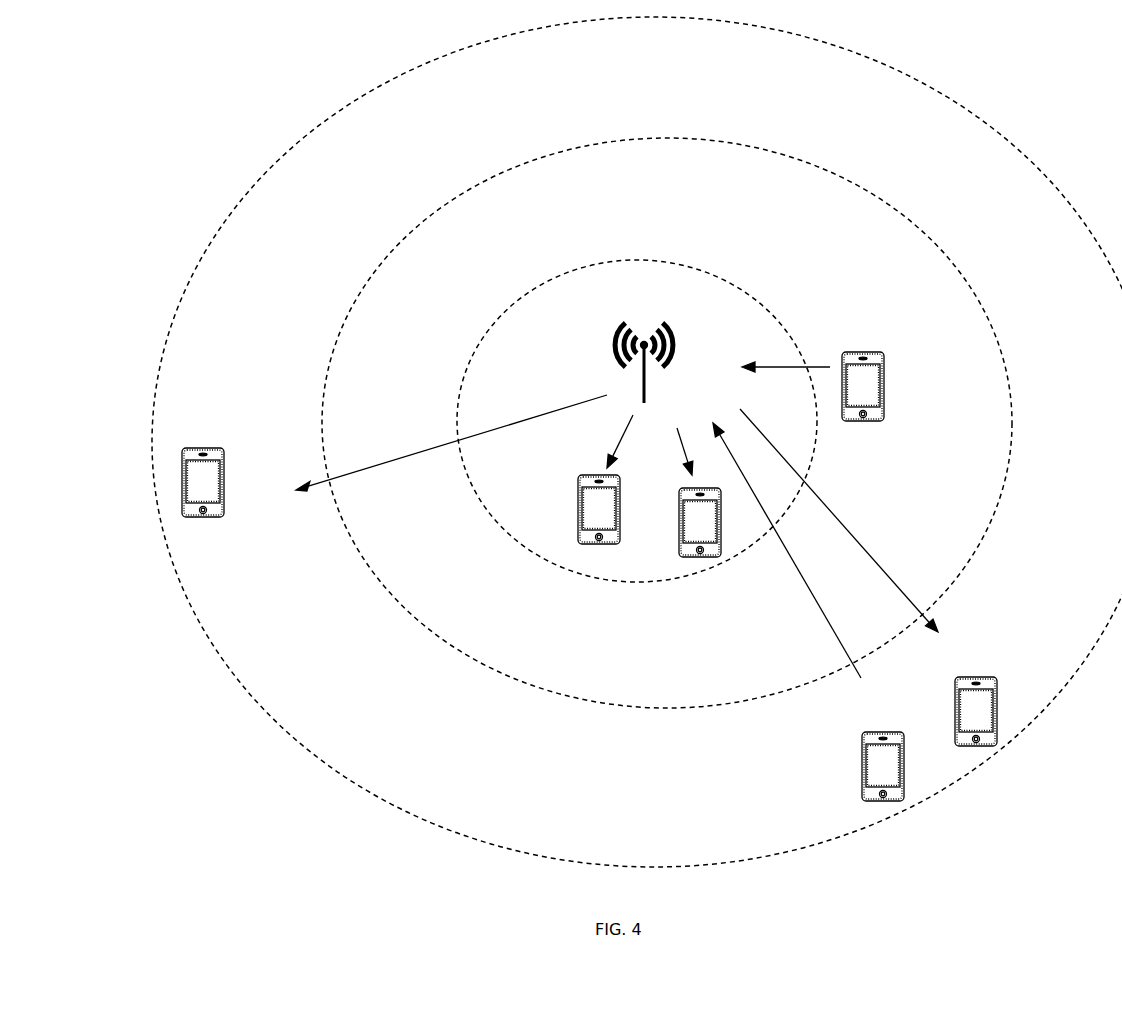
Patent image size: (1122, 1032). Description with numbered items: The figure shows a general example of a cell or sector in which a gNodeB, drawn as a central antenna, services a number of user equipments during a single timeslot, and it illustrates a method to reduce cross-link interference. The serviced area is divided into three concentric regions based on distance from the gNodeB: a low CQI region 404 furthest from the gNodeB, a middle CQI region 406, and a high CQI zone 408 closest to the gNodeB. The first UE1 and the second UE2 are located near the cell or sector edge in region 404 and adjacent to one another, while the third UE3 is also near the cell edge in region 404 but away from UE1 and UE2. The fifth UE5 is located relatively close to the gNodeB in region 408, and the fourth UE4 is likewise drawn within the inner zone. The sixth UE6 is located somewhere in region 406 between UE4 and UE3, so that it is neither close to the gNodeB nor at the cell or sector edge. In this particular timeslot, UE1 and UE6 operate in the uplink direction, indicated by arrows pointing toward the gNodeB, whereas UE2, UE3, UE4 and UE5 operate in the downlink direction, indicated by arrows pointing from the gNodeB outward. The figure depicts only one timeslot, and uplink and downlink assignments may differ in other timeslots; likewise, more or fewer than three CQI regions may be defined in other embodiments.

The low CQI region 404 is at (485, 803).
The middle CQI region 406 is at (471, 601).
The high CQI zone 408 is at (513, 473).
The first UE UE1 is at (854, 766).
The second UE UE2 is at (1000, 703).
The third UE UE3 is at (211, 500).
The fourth UE UE4 is at (577, 501).
The fifth UE UE5 is at (680, 522).
The sixth UE UE6 is at (887, 395).